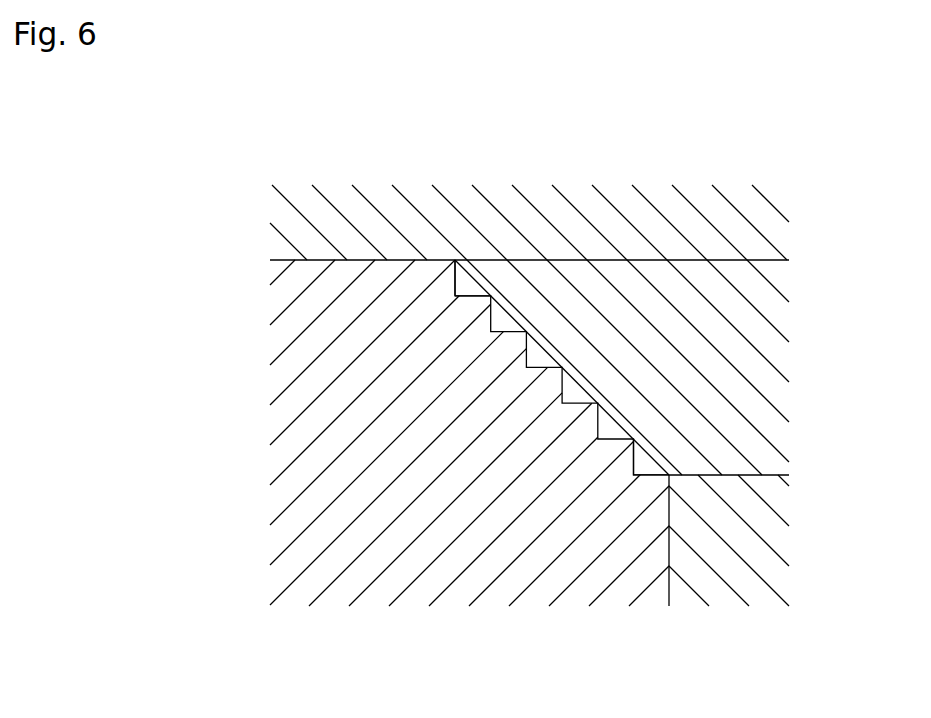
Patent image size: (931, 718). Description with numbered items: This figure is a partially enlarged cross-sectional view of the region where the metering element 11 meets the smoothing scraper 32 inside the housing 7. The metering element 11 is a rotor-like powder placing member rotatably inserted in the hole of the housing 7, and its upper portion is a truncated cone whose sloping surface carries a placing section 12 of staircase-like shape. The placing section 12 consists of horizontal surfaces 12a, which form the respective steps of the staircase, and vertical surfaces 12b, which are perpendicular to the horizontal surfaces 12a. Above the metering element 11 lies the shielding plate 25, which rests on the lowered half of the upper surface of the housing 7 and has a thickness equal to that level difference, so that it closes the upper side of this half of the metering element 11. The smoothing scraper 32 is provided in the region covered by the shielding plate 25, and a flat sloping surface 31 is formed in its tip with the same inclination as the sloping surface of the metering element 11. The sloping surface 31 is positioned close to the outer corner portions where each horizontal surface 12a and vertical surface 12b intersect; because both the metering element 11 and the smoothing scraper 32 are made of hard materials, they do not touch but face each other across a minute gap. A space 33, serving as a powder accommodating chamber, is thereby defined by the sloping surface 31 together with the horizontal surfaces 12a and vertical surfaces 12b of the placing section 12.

The shielding plate 25 is at (350, 197).
The metering element 11 is at (300, 468).
The smoothing scraper 32 is at (765, 357).
The housing 7 is at (738, 578).
The placing section 12 is at (641, 502).
The horizontal surfaces 12a is at (476, 294).
The vertical surfaces 12b is at (458, 261).
The space 33 is at (502, 323).
The sloping surface 31 is at (648, 455).